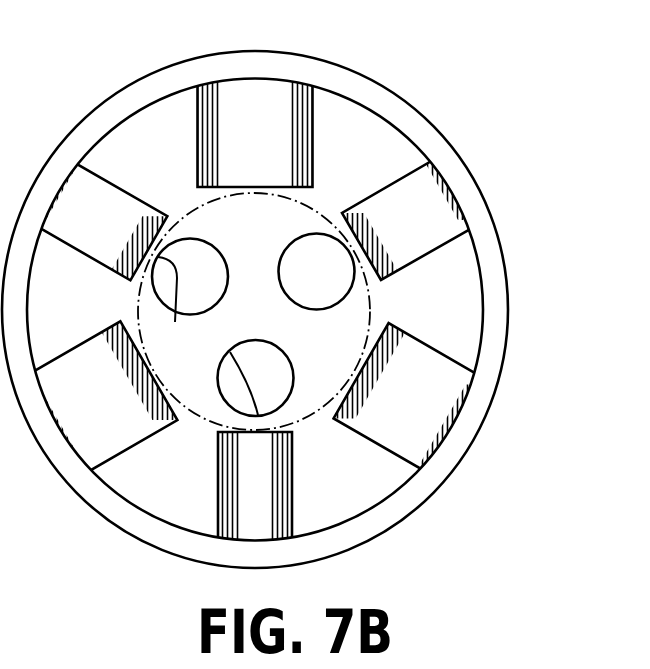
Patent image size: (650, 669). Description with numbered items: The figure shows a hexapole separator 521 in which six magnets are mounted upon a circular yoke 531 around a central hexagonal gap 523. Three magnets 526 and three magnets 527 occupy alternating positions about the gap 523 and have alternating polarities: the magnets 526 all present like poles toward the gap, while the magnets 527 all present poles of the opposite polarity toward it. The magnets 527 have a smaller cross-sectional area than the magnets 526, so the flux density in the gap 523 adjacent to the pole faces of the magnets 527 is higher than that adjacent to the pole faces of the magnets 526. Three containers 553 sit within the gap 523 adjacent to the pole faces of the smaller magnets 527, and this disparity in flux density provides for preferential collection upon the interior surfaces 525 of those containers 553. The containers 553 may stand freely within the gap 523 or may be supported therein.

The hexapole separator 521 is at (482, 152).
The circular yoke 531 is at (497, 284).
The magnets 526 is at (313, 122).
The magnets 527 is at (127, 191).
The hexagonal gap 523 is at (367, 320).
The containers 553 is at (298, 238).
The interior surfaces 525 is at (230, 350).